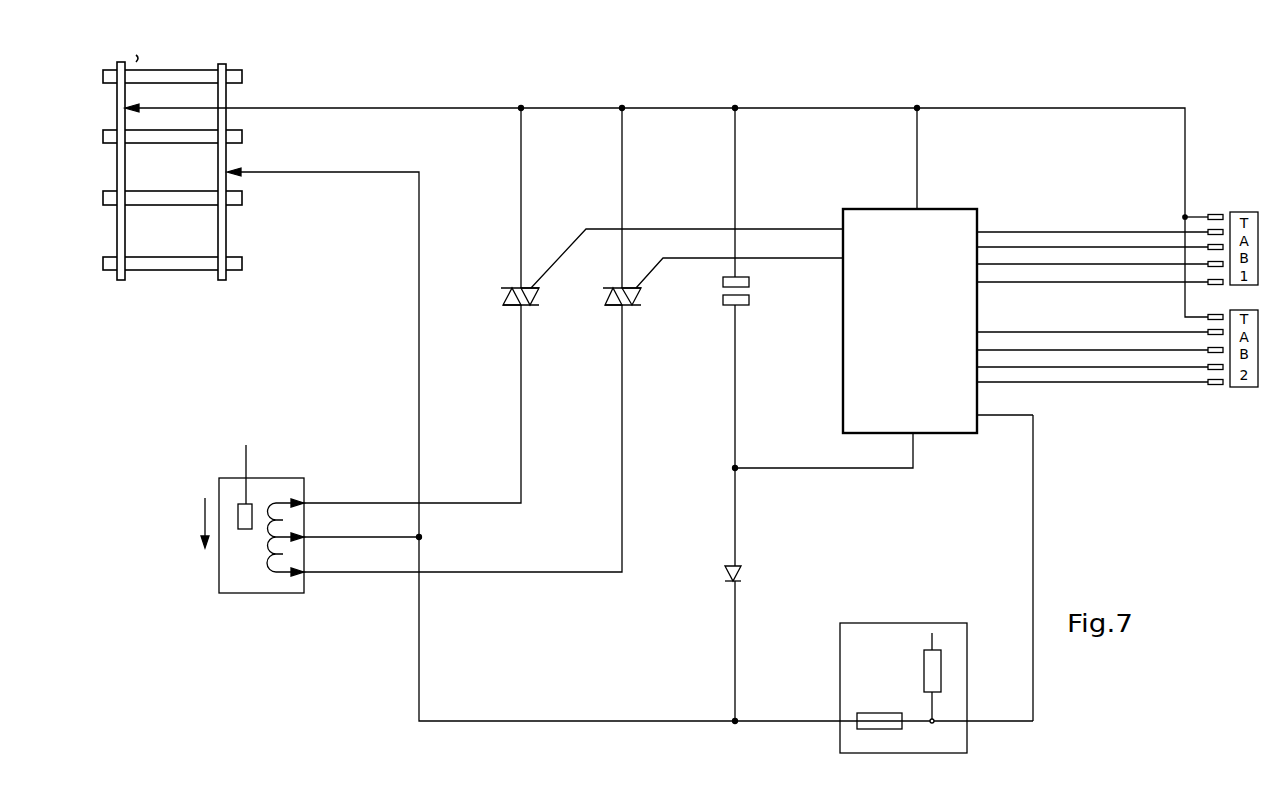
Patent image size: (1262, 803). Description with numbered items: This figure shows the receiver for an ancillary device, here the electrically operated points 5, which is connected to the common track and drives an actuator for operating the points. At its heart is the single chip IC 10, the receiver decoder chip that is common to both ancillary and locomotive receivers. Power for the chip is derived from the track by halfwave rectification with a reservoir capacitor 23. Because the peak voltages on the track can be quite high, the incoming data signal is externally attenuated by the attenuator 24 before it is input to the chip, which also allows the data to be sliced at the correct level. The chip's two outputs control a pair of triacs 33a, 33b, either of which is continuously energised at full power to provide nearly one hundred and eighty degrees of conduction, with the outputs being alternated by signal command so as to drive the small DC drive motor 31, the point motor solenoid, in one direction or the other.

The single chip IC 10 is at (963, 209).
The reservoir capacitor 23 is at (752, 300).
The attenuator 24 is at (968, 742).
The DC drive motor 31 is at (295, 478).
The triac 33a is at (532, 306).
The triac 33b is at (612, 289).
The electrically operated points 5 is at (1055, 480).